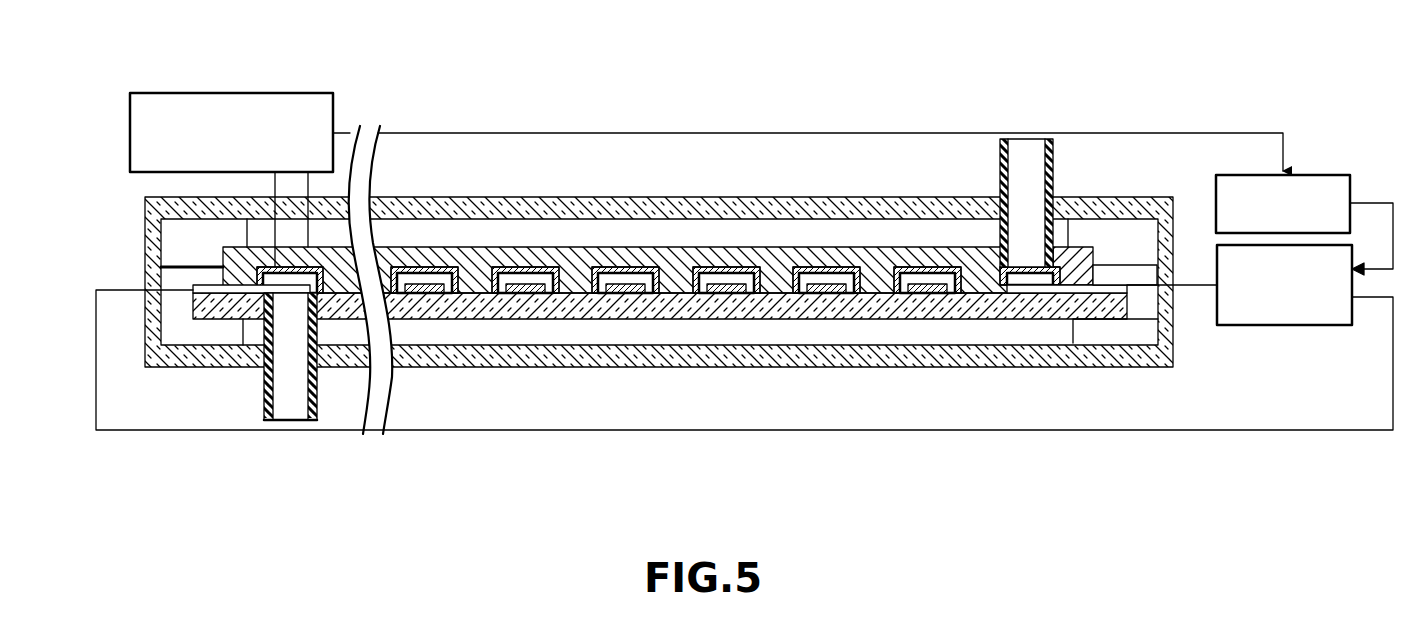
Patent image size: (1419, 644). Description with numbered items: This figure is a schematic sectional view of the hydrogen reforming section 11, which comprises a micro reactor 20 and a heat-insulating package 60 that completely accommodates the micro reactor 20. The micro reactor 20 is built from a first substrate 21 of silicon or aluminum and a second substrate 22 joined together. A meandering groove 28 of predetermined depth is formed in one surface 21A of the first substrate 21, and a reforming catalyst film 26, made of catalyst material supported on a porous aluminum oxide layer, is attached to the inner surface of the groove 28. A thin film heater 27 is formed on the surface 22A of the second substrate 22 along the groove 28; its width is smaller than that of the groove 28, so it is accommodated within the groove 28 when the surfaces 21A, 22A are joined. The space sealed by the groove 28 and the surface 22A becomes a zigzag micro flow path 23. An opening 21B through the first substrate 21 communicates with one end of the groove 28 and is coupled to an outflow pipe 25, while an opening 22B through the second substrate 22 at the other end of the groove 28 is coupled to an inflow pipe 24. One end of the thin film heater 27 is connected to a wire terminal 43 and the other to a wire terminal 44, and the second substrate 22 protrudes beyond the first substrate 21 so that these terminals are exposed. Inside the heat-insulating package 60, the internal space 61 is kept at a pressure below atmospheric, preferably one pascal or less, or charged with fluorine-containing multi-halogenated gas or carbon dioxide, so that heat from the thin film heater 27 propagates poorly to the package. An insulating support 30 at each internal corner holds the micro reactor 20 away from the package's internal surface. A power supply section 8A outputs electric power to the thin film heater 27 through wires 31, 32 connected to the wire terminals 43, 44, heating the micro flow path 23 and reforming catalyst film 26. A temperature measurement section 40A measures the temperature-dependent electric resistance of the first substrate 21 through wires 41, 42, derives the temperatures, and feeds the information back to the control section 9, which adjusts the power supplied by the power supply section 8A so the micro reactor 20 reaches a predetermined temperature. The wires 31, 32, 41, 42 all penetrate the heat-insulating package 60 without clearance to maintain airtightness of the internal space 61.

The hydrogen reforming section 11 is at (630, 273).
The micro reactor 20 is at (455, 236).
The first substrate 21 is at (630, 273).
The one surface of the first substrate 21A is at (775, 293).
The opening 21B is at (960, 250).
The second substrate 22 is at (905, 305).
The surface of the second substrate 22A is at (481, 300).
The opening 22B is at (263, 393).
The micro flow path 23 is at (818, 280).
The inflow pipe 24 is at (317, 395).
The outflow pipe 25 is at (992, 165).
The reforming catalyst film 26 is at (730, 268).
The thin film heater 27 is at (620, 262).
The groove 28 is at (912, 275).
The insulating support 30 is at (183, 233).
The wire 31 is at (1196, 283).
The wire 32 is at (1225, 428).
The wire 41 is at (273, 183).
The wire 42 is at (305, 232).
The wire terminal 43 is at (1130, 233).
The wire terminal 44 is at (203, 287).
The heat-insulating package 60 is at (795, 355).
The internal space 61 is at (520, 235).
The control section 9 is at (1333, 173).
The power supply section 8A is at (1318, 327).
The temperature measurement section 40A is at (304, 93).